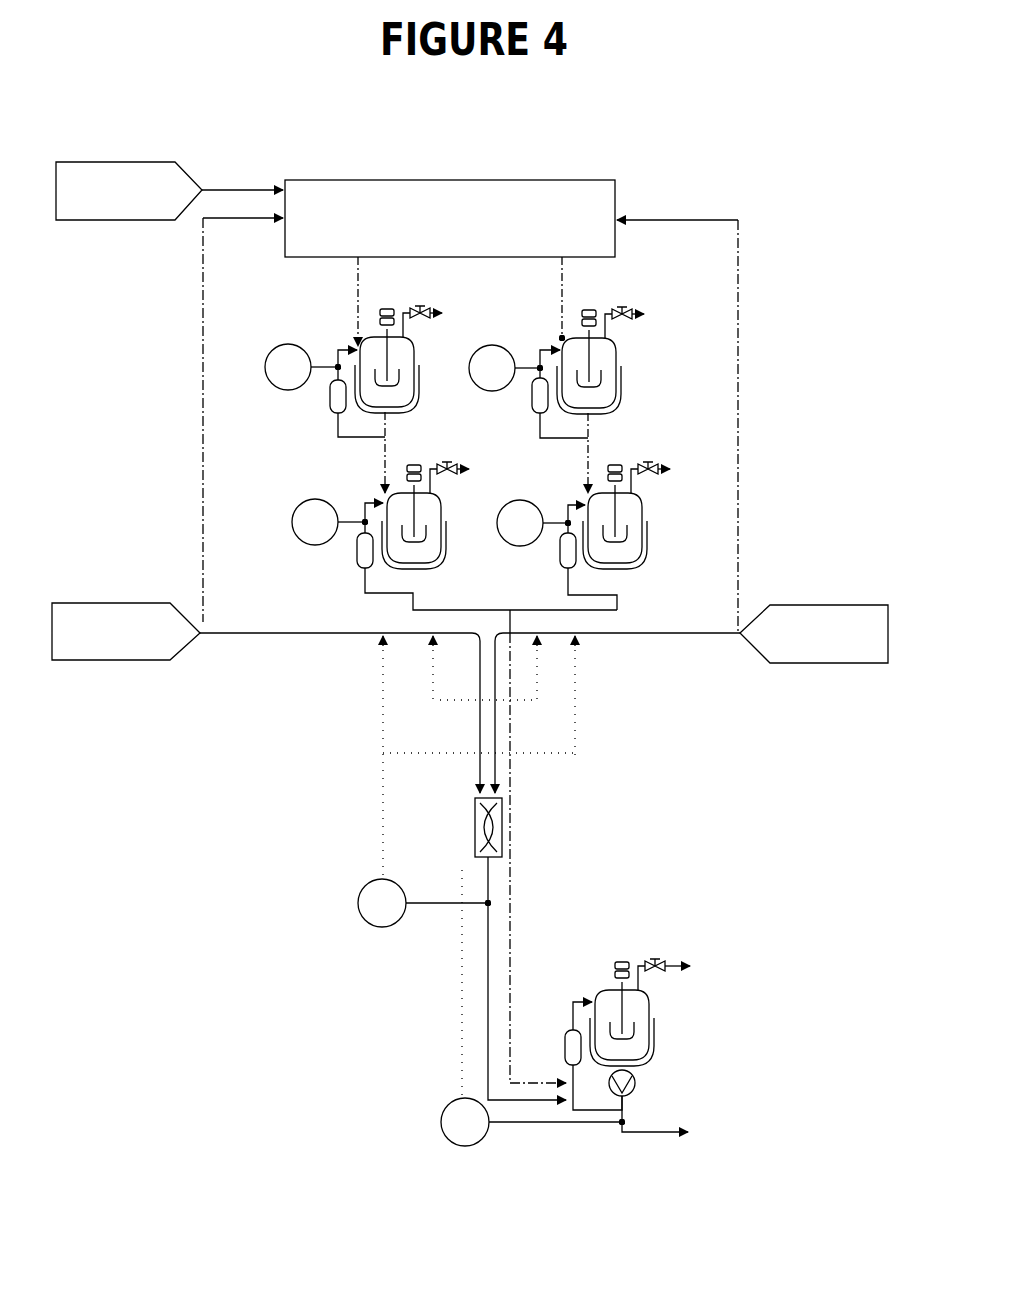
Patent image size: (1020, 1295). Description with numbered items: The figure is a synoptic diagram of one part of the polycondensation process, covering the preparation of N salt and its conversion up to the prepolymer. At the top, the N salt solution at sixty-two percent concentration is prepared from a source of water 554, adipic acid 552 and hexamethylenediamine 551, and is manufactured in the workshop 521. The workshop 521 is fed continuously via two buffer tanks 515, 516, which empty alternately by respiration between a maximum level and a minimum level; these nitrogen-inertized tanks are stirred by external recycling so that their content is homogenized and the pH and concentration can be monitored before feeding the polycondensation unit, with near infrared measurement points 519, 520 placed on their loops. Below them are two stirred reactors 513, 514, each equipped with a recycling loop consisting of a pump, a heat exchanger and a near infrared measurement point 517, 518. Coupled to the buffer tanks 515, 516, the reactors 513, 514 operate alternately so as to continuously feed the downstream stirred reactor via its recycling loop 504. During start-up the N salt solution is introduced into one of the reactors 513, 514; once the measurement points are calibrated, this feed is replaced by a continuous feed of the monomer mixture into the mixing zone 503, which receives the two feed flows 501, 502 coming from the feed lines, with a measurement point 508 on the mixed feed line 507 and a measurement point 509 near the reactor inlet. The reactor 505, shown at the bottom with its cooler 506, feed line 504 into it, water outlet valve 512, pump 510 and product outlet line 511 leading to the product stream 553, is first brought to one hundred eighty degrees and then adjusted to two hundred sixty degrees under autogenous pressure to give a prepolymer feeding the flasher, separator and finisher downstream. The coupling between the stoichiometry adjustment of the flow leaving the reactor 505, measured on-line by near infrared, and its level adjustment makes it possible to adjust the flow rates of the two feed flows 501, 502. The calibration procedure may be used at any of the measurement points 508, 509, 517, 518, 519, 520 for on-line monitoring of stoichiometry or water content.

The feed flow 501 is at (328, 640).
The feed flow 502 is at (712, 642).
The mixing zone 503 is at (472, 841).
The recycling loop 504 is at (573, 1080).
The reactor 505 is at (652, 1022).
The cooler/heat exchanger 506 is at (565, 1038).
The mixed feed line 507 is at (486, 1012).
The measurement point 508 is at (358, 907).
The measurement point 509 is at (441, 1122).
The pump 510 is at (633, 1094).
The product outlet line 511 is at (672, 1137).
The water outlet valve 512 is at (670, 962).
The stirred reactor 513 is at (443, 558).
The stirred reactor 514 is at (646, 558).
The buffer tank 515 is at (414, 402).
The buffer tank 516 is at (618, 402).
The measurement point 517 is at (295, 510).
The measurement point 518 is at (583, 507).
The measurement point 519 is at (268, 358).
The measurement point 520 is at (536, 360).
The workshop 521 is at (617, 206).
The hexamethylenediamine 551 is at (160, 605).
The adipic acid 552 is at (872, 608).
The product stream 553 is at (725, 1135).
The source of water 554 is at (160, 165).